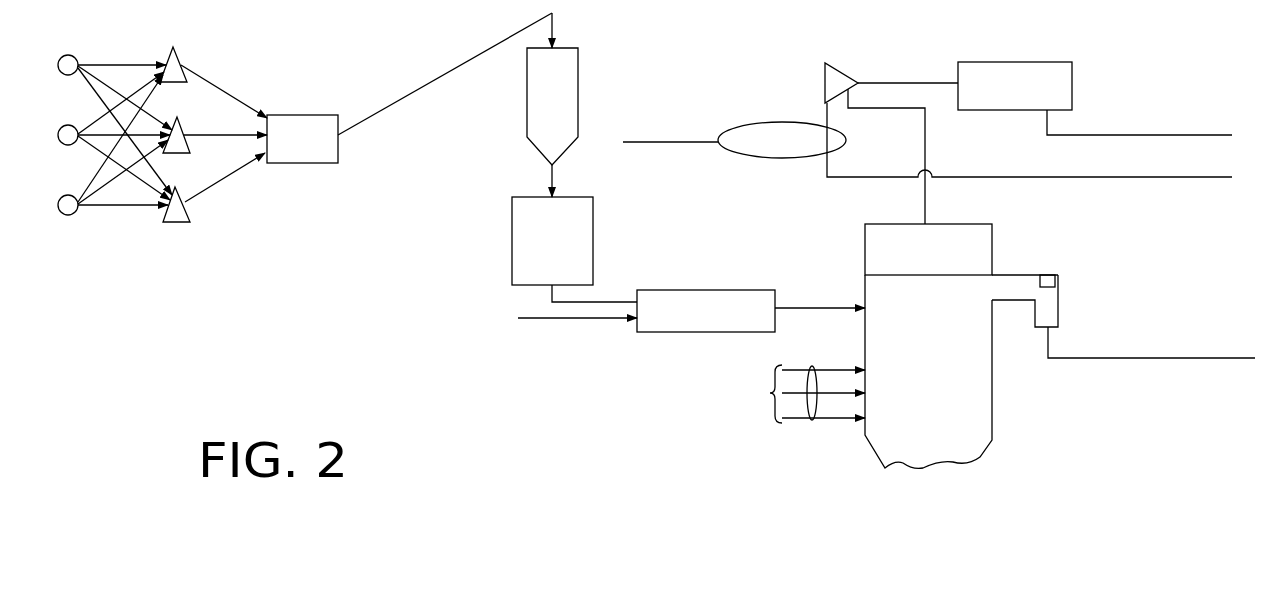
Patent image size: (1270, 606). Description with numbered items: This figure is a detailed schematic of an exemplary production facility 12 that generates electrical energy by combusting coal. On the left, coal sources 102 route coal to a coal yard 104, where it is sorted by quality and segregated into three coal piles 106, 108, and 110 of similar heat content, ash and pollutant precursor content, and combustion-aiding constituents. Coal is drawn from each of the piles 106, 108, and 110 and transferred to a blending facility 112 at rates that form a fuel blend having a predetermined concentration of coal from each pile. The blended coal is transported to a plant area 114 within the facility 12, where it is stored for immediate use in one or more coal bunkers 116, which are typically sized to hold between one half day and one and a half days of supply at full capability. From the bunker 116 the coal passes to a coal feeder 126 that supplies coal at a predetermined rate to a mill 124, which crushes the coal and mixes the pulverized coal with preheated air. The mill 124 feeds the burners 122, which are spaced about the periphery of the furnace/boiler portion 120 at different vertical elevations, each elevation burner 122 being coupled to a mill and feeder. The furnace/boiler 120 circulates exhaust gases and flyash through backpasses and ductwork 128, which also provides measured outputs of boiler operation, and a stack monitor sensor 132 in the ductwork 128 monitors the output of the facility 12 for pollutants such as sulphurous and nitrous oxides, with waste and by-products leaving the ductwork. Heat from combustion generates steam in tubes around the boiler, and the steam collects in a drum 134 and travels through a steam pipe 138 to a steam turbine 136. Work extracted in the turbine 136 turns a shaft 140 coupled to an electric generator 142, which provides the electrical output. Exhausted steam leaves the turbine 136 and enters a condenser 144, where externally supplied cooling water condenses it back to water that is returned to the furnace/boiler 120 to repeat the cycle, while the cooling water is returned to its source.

The facility 12 is at (350, 53).
The coal sources 102 is at (68, 122).
The coal yard 104 is at (175, 237).
The coal pile 106 is at (178, 58).
The coal pile 108 is at (182, 122).
The coal pile 110 is at (187, 210).
The blending facility 112 is at (286, 150).
The plant area 114 is at (473, 367).
The coal bunkers 116 is at (537, 100).
The furnace/boiler portion 120 is at (918, 385).
The burners 122 is at (812, 308).
The mill 124 is at (707, 290).
The coal feeder 126 is at (537, 276).
The backpasses and ductwork 128 is at (1010, 288).
The stack monitor sensor 132 is at (1045, 275).
The drum 134 is at (963, 253).
The steam turbine 136 is at (837, 63).
The steam pipe 138 is at (925, 192).
The shaft 140 is at (905, 83).
The electric generator 142 is at (1000, 95).
The condenser 144 is at (758, 121).